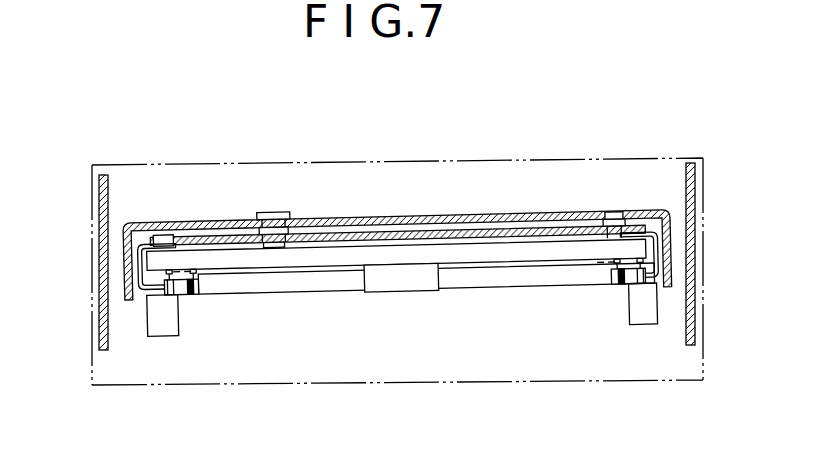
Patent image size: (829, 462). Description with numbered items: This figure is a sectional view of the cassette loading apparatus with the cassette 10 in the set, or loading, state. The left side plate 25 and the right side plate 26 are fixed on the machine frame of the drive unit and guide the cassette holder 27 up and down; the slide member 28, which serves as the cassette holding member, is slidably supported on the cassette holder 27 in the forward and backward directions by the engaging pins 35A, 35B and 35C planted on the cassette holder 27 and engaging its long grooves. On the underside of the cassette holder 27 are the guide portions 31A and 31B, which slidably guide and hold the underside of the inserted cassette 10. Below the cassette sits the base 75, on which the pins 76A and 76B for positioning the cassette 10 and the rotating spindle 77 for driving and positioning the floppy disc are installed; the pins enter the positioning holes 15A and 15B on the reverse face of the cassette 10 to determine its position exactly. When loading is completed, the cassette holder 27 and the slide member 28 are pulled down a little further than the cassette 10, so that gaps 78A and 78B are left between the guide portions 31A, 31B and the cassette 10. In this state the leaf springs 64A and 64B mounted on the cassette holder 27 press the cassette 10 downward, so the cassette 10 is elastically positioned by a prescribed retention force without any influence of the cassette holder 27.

The cassette 10 is at (317, 272).
The positioning hole 15A is at (186, 274).
The positioning hole 15B is at (610, 260).
The left side plate 25 is at (98, 203).
The right side plate 26 is at (694, 188).
The cassette holder 27 is at (448, 236).
The slide member 28 is at (364, 220).
The guide portion 31A is at (170, 296).
The guide portion 31B is at (618, 273).
The engaging pin 35A is at (268, 217).
The engaging pin 35B is at (272, 182).
The engaging pin 35C is at (515, 222).
The leaf spring 64A is at (150, 245).
The leaf spring 64B is at (606, 230).
The base 75 is at (459, 410).
The pin 76A is at (196, 286).
The pin 76B is at (613, 272).
The rotating spindle 77 is at (435, 265).
The gap 78A is at (152, 338).
The gap 78B is at (633, 324).